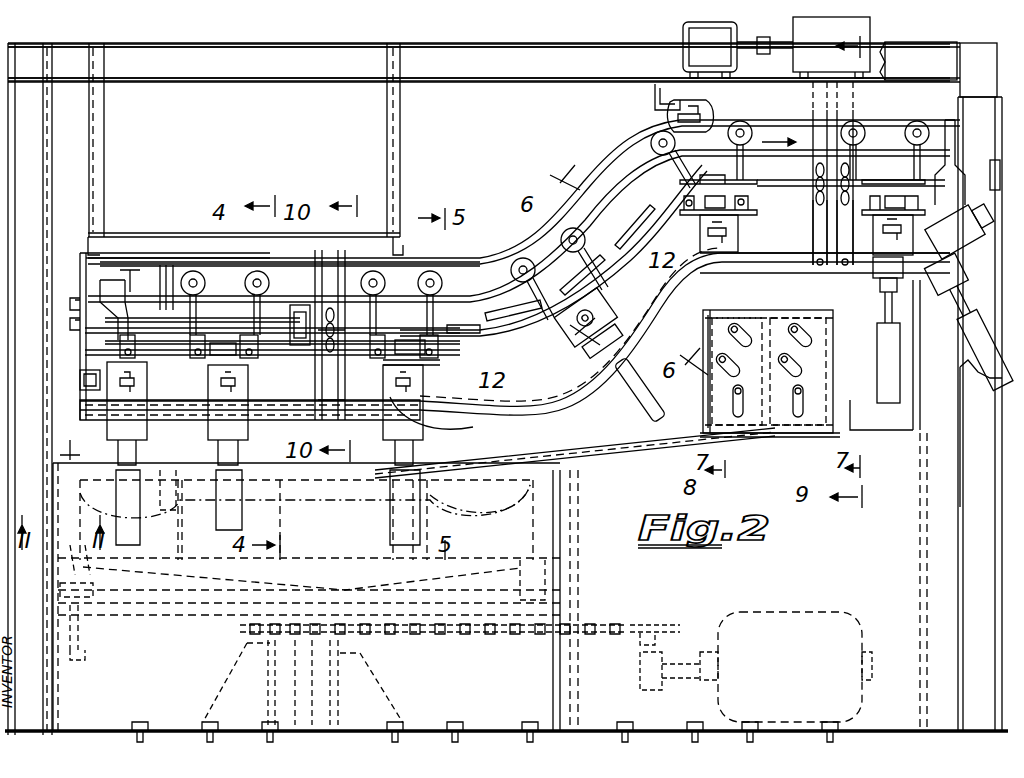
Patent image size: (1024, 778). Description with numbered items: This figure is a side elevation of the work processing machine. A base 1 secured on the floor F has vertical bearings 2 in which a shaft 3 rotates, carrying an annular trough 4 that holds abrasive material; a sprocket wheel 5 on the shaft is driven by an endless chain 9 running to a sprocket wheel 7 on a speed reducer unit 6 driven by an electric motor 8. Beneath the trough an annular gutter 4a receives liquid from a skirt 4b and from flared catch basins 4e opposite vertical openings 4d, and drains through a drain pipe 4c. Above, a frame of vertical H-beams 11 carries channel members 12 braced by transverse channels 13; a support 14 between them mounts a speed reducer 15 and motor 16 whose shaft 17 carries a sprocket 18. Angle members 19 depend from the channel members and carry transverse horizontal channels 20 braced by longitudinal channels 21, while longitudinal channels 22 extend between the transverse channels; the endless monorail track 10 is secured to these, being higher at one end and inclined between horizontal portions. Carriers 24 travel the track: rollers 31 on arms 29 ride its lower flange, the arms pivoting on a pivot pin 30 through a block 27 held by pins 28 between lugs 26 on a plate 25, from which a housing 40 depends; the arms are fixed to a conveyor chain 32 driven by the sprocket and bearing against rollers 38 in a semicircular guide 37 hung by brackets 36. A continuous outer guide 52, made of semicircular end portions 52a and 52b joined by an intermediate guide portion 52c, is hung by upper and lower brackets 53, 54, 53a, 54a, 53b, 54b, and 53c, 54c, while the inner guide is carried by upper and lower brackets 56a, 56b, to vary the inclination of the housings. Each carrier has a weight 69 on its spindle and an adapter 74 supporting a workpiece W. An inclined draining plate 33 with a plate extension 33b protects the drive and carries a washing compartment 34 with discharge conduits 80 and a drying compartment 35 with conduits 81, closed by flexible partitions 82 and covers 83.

The base 1 is at (228, 660).
The vertical bearings 2 is at (338, 658).
The shaft 3 is at (313, 684).
The annular trough 4 is at (80, 490).
The annular gutter 4a is at (75, 460).
The skirt 4b is at (78, 590).
The drain pipe 4c is at (86, 653).
The vertical openings 4d is at (525, 548).
The catch basin 4e is at (525, 525).
The sprocket wheel 5 is at (240, 630).
The speed reducer unit 6 is at (645, 652).
The sprocket wheel 7 is at (622, 625).
The electric motor 8 is at (775, 612).
The endless chain 9 is at (455, 636).
The endless monorail track 10 is at (491, 256).
The vertical H-beams 11 is at (958, 624).
The channel members 12 is at (312, 44).
The transverse channels 13 is at (655, 90).
The support 14 is at (757, 52).
The speed reducer 15 is at (833, 17).
The motor 16 is at (718, 22).
The shaft 17 is at (838, 96).
The sprocket 18 is at (812, 180).
The angle members 19 is at (104, 165).
The transverse horizontal channels 20 is at (403, 248).
The longitudinal channels 21 is at (187, 234).
The longitudinal channels 22 is at (776, 132).
The carriers 24 is at (147, 390).
The plate 25 is at (248, 378).
The lugs 26 is at (118, 356).
The block 27 is at (440, 365).
The pins 28 is at (136, 352).
The arms 29 is at (122, 342).
The pivot pin 30 is at (440, 350).
The rollers 31 is at (386, 285).
The conveyor chain 32 is at (892, 180).
The inclined draining plate 33 is at (612, 458).
The plate extension 33b is at (168, 612).
The washing compartment 34 is at (703, 330).
The drying compartment 35 is at (790, 318).
The brackets 36 is at (270, 262).
The semicircular guide 37 is at (236, 328).
The rollers 38 is at (304, 305).
The housing 40 is at (423, 384).
The outer guide 52 is at (552, 414).
The semicircular end portion 52a is at (270, 420).
The semicircular end portion 52b is at (929, 219).
The intermediate guide portion 52c is at (380, 440).
The upper bracket 53 is at (348, 252).
The upper bracket 53a is at (816, 106).
The upper bracket piece 53b is at (80, 296).
The upper bracket piece 53c is at (956, 136).
The lower brackets 54 is at (315, 388).
The lower bracket 54a is at (813, 244).
The lower bracket piece 54b is at (80, 378).
The lower bracket piece 54c is at (990, 172).
The upper bracket 56a is at (822, 253).
The lower bracket 56b is at (920, 378).
The weight 69 is at (585, 340).
The adapter 74 is at (877, 326).
The discharge conduits 80 is at (738, 417).
The discharge conduits 81 is at (798, 374).
The flexible vertical partitions 82 is at (784, 437).
The flexible covers 83 is at (768, 318).
The workpiece W is at (975, 345).
The floor F is at (106, 734).